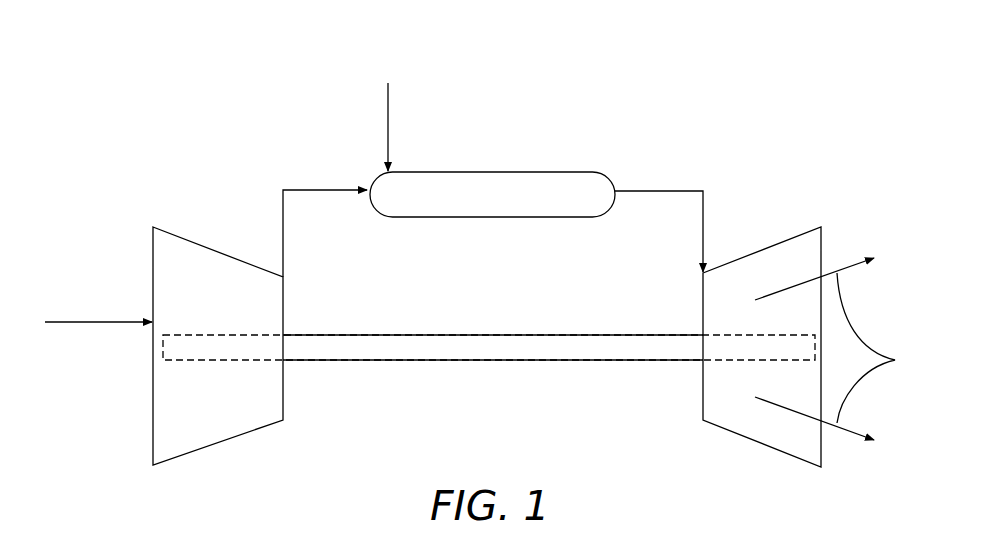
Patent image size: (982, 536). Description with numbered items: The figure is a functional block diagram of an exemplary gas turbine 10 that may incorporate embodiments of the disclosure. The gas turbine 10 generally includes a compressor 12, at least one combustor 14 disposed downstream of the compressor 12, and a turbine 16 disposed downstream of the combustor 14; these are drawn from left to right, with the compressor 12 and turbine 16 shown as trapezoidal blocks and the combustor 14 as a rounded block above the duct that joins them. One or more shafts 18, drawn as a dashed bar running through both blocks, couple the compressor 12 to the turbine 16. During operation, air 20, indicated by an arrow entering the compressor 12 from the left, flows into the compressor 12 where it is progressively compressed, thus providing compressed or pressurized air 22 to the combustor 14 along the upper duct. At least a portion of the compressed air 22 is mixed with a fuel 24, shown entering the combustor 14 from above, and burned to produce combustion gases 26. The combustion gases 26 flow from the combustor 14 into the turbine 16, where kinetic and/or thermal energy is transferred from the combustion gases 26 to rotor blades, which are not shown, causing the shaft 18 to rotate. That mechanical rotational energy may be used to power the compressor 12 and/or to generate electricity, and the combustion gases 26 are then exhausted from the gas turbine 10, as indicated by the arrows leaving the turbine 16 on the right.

The gas turbine 10 is at (486, 243).
The compressor 12 is at (210, 248).
The combustor 14 is at (572, 172).
The turbine 16 is at (760, 248).
The shaft 18 is at (428, 360).
The air 20 is at (100, 322).
The compressed air 22 is at (328, 188).
The fuel 24 is at (390, 112).
The combustion gases 26 is at (660, 191).